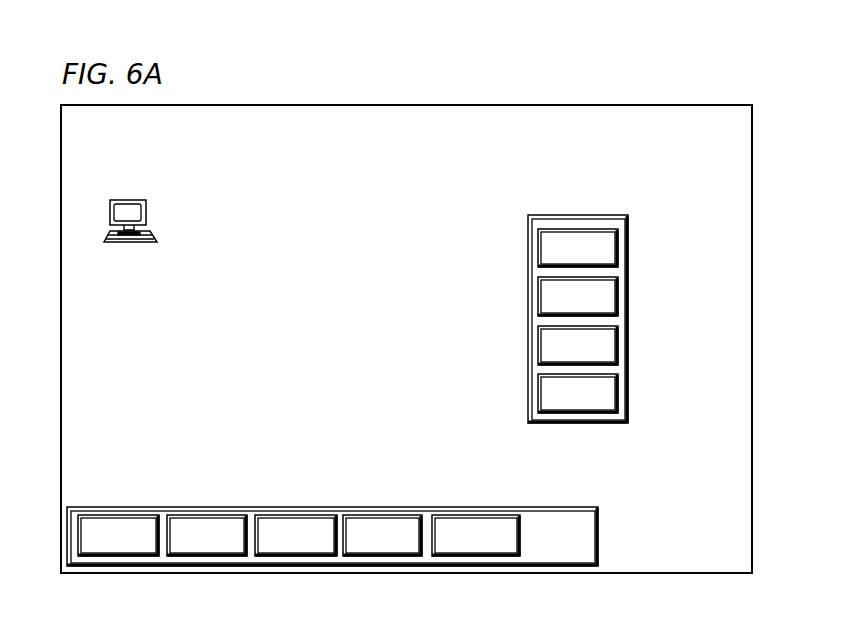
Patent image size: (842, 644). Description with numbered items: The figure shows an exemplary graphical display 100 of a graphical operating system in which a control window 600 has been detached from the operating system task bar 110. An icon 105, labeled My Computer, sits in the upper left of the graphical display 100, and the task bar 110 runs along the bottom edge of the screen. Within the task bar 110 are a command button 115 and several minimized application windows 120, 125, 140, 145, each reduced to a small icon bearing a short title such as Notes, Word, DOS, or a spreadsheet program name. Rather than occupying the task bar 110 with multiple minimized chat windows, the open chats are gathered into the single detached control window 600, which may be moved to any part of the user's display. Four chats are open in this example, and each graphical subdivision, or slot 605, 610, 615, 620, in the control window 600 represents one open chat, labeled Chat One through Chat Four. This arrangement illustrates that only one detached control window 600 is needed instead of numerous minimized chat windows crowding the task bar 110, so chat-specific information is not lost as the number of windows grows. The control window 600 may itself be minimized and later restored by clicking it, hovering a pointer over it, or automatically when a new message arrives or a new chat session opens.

The graphical display 100 is at (367, 333).
The icon 105 is at (146, 214).
The task bar 110 is at (602, 536).
The command button 115 is at (124, 514).
The minimized application window 120 is at (209, 514).
The minimized application window 125 is at (296, 514).
The minimized application window 140 is at (394, 514).
The minimized application window 145 is at (480, 514).
The control window 600 is at (527, 292).
The slot 605 is at (620, 248).
The slot 610 is at (620, 297).
The slot 615 is at (620, 345).
The slot 620 is at (620, 392).